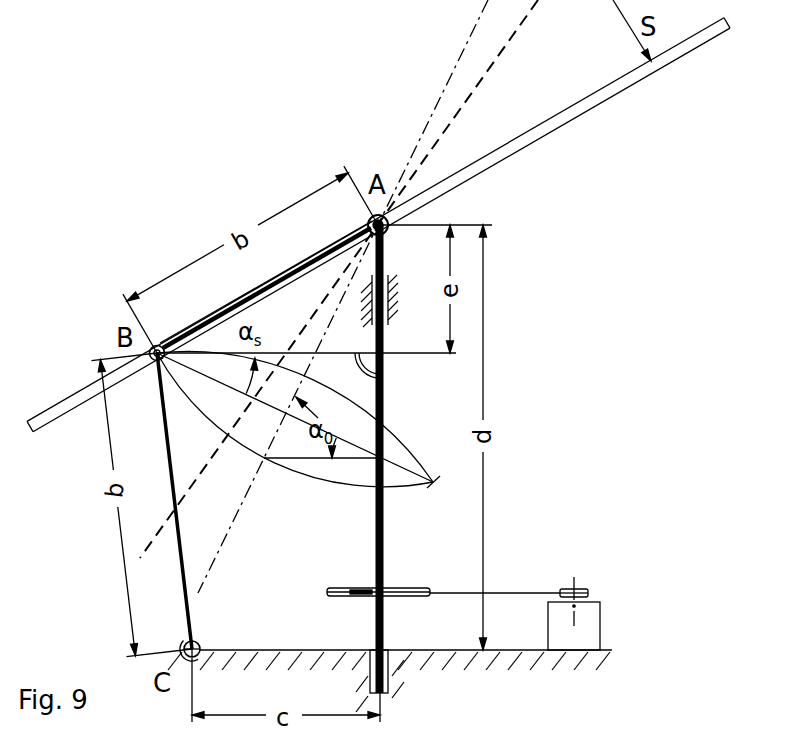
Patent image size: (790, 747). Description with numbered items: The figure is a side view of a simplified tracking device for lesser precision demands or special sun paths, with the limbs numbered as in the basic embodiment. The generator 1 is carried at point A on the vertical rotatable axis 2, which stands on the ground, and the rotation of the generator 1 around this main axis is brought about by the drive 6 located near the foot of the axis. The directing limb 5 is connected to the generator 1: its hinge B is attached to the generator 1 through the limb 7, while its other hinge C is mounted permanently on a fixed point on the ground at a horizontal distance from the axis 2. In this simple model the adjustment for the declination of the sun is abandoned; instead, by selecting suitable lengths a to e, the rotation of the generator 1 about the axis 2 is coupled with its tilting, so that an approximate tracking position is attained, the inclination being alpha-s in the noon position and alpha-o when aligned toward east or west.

The generator 1 is at (585, 105).
The vertical rotatable axis 2 is at (384, 395).
The directing limb 5 is at (181, 563).
The drive 6 is at (407, 588).
The limb 7 is at (243, 300).